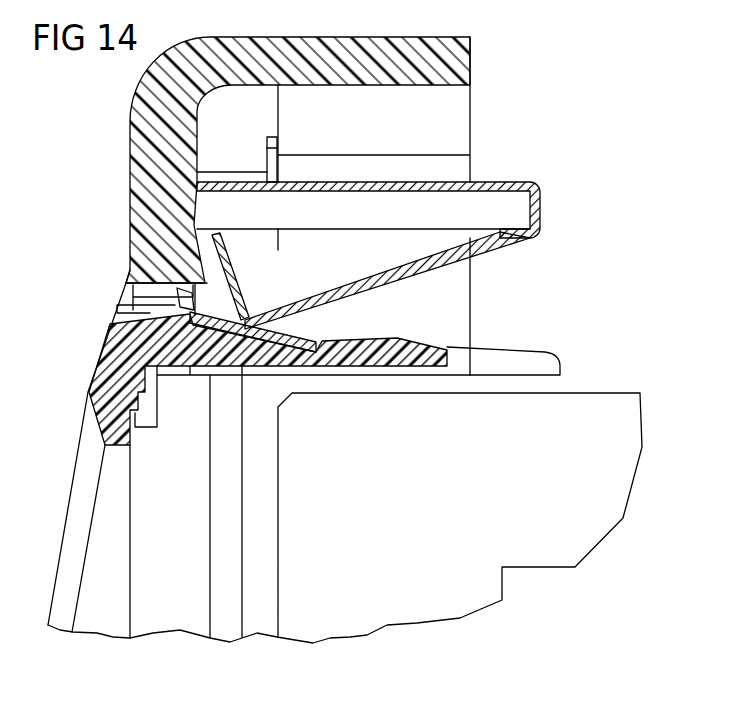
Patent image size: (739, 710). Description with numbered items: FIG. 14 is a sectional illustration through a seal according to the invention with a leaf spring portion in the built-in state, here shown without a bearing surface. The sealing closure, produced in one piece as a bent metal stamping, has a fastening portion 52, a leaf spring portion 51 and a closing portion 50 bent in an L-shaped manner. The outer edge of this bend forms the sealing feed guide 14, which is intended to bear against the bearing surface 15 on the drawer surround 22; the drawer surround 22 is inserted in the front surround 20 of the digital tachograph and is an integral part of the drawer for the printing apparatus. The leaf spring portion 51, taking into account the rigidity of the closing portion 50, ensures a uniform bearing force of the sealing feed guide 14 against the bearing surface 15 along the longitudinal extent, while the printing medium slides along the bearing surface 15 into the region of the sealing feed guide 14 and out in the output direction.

The sealing feed guide 14 is at (246, 312).
The bearing surface 15 is at (241, 330).
The front surround 20 is at (143, 177).
The drawer surround 22 is at (108, 402).
The closing portion 50 is at (227, 283).
The leaf spring portion 51 is at (397, 279).
The fastening portion 52 is at (399, 183).